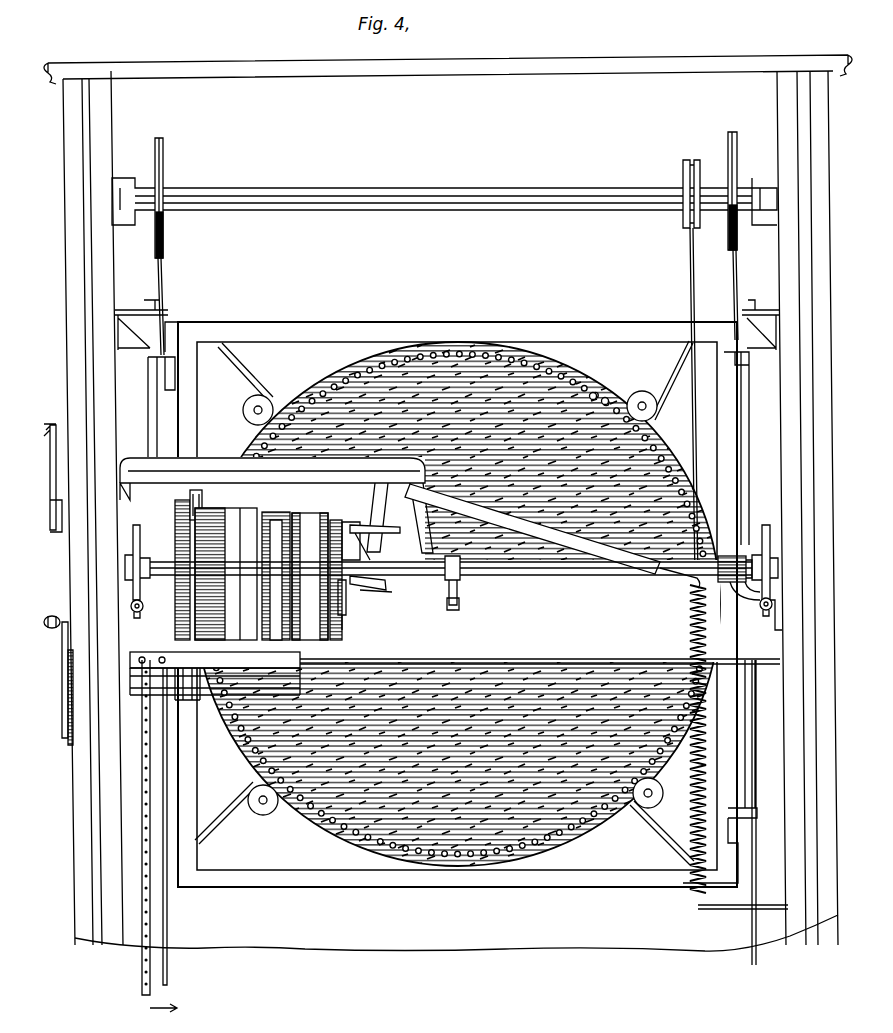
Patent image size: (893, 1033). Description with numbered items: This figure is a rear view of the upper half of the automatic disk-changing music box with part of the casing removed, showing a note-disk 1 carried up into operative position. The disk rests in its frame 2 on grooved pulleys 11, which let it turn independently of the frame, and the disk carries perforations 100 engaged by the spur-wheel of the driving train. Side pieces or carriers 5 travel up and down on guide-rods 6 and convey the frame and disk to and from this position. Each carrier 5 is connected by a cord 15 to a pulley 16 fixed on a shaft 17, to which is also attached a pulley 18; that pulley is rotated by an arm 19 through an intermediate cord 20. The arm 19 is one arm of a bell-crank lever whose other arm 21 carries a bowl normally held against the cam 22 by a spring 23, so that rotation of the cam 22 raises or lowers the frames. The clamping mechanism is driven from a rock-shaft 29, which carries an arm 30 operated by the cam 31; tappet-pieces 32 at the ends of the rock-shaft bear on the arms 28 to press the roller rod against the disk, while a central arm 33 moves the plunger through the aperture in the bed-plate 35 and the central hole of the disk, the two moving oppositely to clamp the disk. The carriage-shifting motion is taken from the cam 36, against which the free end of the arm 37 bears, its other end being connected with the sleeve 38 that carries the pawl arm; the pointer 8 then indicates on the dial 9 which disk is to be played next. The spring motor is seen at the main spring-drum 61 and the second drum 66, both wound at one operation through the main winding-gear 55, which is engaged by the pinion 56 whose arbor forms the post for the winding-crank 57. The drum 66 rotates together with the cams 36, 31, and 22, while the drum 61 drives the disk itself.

The note-disk 1 is at (310, 808).
The frame 2 is at (604, 880).
The side pieces or carriers 5 is at (749, 380).
The guide-rods 6 is at (150, 345).
The hand or pointer 8 is at (63, 738).
The dial 9 is at (70, 750).
The grooved pulleys 11 is at (243, 408).
The cord 15 is at (163, 285).
The pulley 16 is at (164, 153).
The shaft 17 is at (556, 182).
The pulley 18 is at (683, 214).
The arm 19 is at (682, 572).
The cord 20 is at (690, 262).
The arm 21 is at (392, 572).
The cam 22 is at (380, 596).
The spring 23 is at (690, 636).
The arms 28 is at (143, 606).
The rock-shaft 29 is at (560, 576).
The arm 30 is at (358, 565).
The cam 31 is at (348, 600).
The tappet-pieces 32 is at (141, 541).
The arm 33 is at (460, 590).
The plate 35 is at (750, 604).
The cam 36 is at (268, 540).
The arm 37 is at (278, 658).
The sleeve 38 is at (210, 702).
The main winding-gear 55 is at (176, 516).
The pinion 56 is at (203, 498).
The winding-crank 57 is at (53, 424).
The main spring-drum 61 is at (226, 574).
The second drum 66 is at (310, 576).
The perforations 100 is at (608, 397).